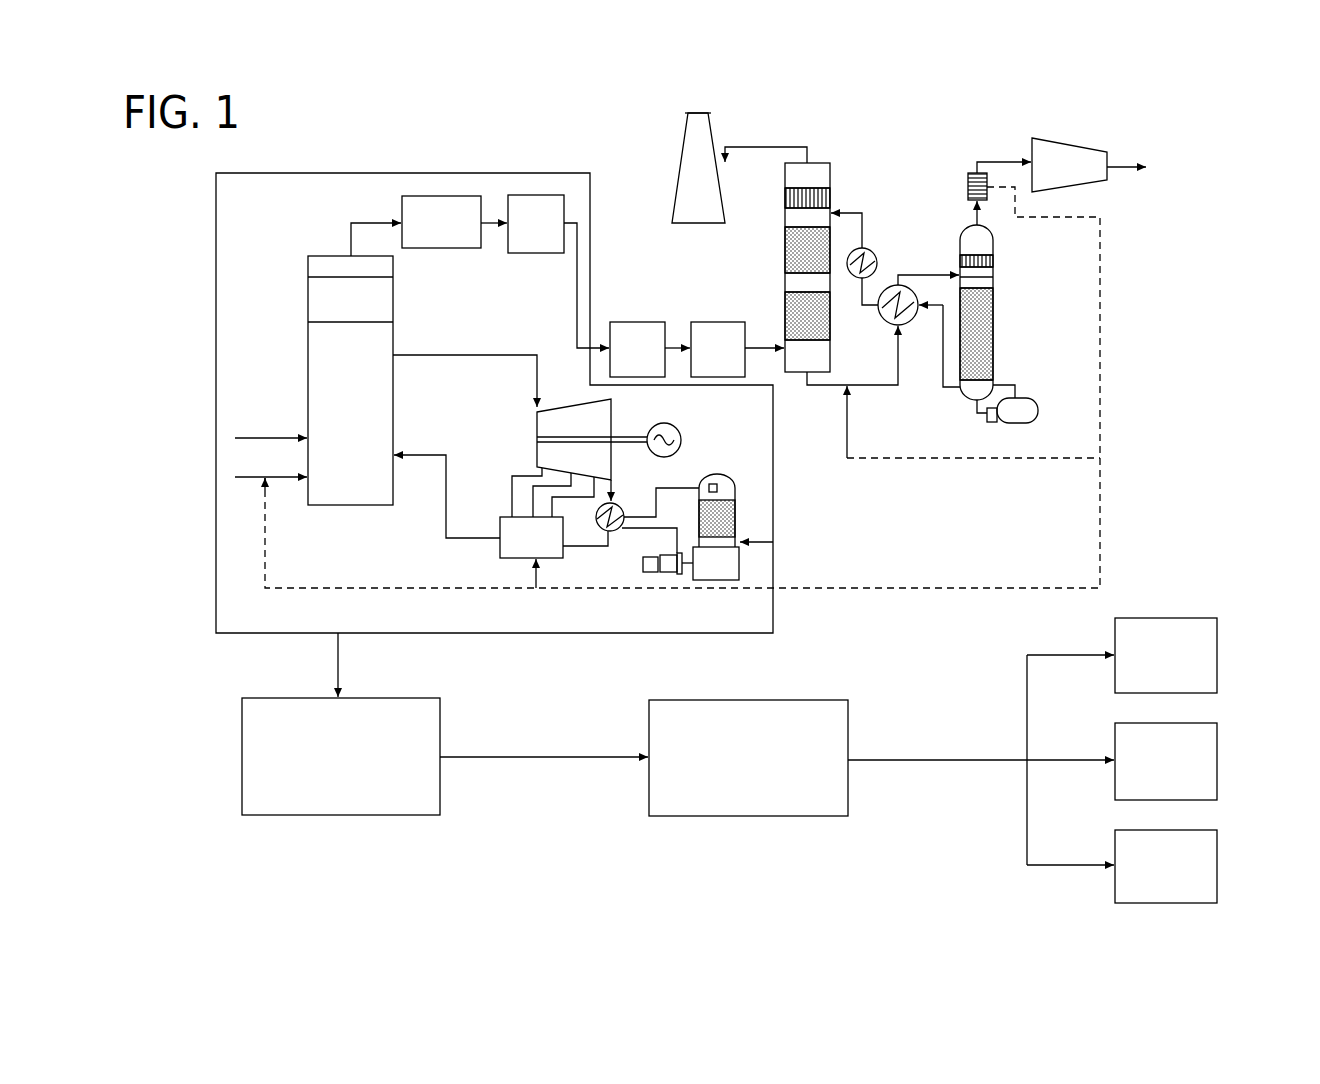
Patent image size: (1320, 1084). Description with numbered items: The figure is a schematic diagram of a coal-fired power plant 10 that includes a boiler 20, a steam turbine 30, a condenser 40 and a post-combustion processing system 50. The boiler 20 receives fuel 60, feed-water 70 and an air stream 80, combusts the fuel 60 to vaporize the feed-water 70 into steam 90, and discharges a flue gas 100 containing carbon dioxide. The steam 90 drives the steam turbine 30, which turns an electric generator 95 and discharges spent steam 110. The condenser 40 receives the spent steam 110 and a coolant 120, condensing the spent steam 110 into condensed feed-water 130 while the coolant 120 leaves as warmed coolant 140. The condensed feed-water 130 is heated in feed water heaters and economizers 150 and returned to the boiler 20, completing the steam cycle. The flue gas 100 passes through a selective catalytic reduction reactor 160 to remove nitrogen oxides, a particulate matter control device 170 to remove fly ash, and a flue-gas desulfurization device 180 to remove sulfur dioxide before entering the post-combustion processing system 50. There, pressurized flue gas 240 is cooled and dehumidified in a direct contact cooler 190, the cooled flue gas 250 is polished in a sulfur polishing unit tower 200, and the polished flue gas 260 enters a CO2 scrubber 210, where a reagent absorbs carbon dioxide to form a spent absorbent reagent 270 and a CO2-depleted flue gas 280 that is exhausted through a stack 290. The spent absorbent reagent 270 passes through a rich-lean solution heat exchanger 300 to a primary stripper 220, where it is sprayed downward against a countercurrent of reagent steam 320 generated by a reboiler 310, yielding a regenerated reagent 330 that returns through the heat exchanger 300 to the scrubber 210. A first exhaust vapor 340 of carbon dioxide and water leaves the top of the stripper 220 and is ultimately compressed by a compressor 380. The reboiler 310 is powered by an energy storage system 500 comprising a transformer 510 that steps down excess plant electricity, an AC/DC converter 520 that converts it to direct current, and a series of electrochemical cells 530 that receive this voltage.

The power plant 10 is at (370, 158).
The boiler 20 is at (308, 352).
The steam turbine 30 is at (612, 420).
The condenser 40 is at (622, 508).
The post-combustion processing system 50 is at (1090, 124).
The fuel 60 is at (260, 438).
The feed-water 70 is at (423, 455).
The air stream 80 is at (248, 478).
The steam 90 is at (448, 355).
The electric generator 95 is at (680, 438).
The flue gas 100 is at (372, 222).
The spent steam 110 is at (613, 498).
The coolant 120 is at (632, 532).
The condensed feed-water 130 is at (583, 546).
The warmed coolant 140 is at (657, 515).
The feed water heaters and economizers 150 is at (500, 548).
The selective catalytic reduction reactor 160 is at (308, 296).
The particulate matter control device 170 is at (437, 196).
The flue-gas desulfurization device 180 is at (533, 195).
The direct contact cooler 190 is at (628, 322).
The sulfur polishing unit tower 200 is at (715, 322).
The CO2 scrubber 210 is at (830, 287).
The primary stripper 220 is at (993, 275).
The pressurized flue gas 240 is at (577, 292).
The cooled flue gas 250 is at (672, 348).
The SO2-polished flue gas 260 is at (760, 348).
The spent absorbent reagent 270 is at (922, 275).
The CO2-depleted flue gas 280 is at (762, 147).
The stack 290 is at (692, 113).
The rich-lean solution heat exchanger 300 is at (910, 325).
The reboiler 310 is at (1030, 400).
The reagent steam 320 is at (1005, 385).
The regenerated reagent 330 is at (862, 232).
The first exhaust vapor 340 is at (981, 215).
The compressor 380 is at (1075, 186).
The energy storage system 500 is at (200, 853).
The transformer 510 is at (242, 740).
The AC/DC converter 520 is at (818, 700).
The electrochemical cells 530 is at (1217, 655).